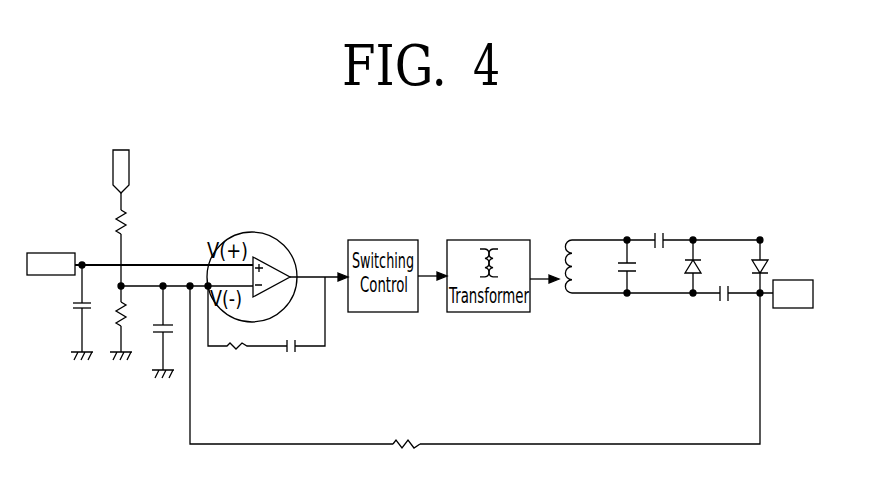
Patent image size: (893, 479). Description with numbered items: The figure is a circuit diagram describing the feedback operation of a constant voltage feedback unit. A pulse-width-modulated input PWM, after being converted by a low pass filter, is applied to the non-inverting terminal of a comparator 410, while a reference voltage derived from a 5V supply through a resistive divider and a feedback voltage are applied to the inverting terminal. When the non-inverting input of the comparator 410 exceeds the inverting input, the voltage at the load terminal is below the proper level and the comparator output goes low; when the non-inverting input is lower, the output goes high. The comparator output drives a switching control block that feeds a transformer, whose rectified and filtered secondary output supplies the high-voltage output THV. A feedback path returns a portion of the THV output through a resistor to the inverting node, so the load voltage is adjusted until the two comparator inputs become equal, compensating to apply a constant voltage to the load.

The comparator 410 is at (250, 232).
The PWM signal input PWM is at (51, 264).
The 5V supply 5V is at (121, 171).
The transfer high voltage output THV is at (793, 294).